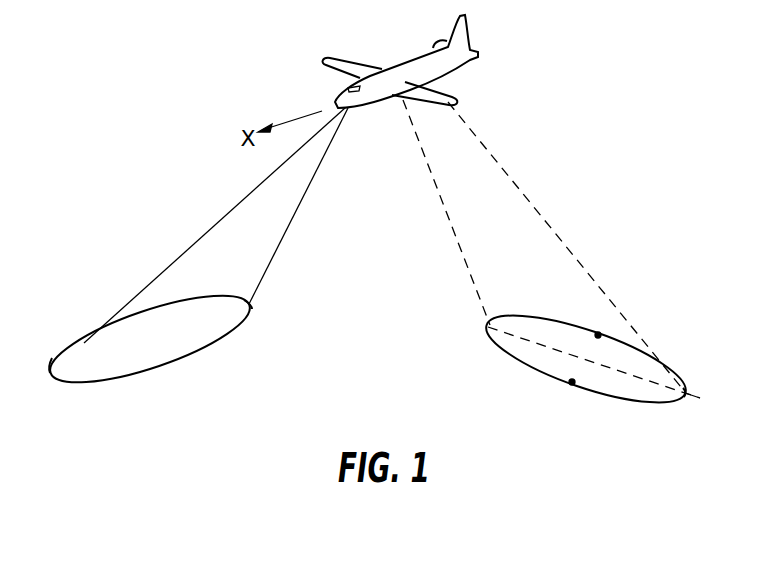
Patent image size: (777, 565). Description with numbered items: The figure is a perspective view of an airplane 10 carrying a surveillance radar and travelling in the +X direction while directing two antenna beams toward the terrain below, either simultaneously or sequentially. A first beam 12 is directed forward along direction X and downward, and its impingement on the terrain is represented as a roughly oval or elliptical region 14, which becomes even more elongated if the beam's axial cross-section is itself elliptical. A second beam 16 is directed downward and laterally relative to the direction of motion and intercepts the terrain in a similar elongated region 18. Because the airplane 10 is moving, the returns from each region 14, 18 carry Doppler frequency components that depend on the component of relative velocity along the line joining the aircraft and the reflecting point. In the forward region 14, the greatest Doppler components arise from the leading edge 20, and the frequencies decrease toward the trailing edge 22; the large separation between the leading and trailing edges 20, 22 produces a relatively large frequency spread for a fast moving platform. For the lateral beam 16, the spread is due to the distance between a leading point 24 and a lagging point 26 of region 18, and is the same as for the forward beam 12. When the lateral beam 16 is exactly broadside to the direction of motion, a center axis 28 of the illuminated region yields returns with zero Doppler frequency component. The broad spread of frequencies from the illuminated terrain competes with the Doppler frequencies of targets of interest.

The airplane 10 is at (403, 56).
The first beam 12 is at (235, 200).
The elliptical region 14 is at (175, 360).
The second beam 16 is at (492, 164).
The elongated region 18 is at (542, 320).
The leading edge 20 is at (50, 371).
The trailing edge 22 is at (250, 310).
The leading point 24 is at (572, 382).
The lagging point 26 is at (598, 335).
The center axis 28 is at (686, 394).